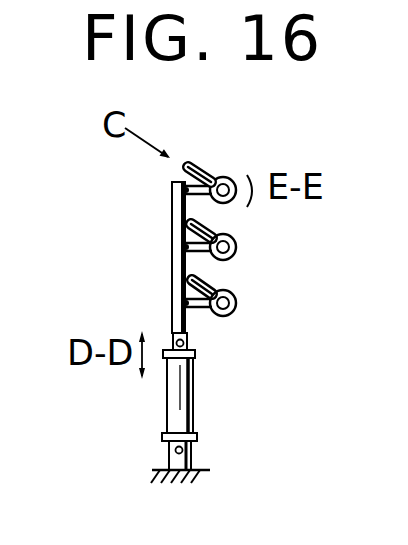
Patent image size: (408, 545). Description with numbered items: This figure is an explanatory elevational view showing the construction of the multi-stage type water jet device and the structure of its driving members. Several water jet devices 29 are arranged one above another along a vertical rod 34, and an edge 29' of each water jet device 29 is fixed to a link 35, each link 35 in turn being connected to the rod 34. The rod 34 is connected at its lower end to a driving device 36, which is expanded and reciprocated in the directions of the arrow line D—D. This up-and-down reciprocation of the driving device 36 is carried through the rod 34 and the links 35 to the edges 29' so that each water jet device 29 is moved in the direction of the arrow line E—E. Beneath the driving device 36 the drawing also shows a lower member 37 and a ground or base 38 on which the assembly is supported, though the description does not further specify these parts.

The water jet device 29 is at (225, 156).
The edge of water jet device 29' is at (149, 178).
The rod 34 is at (172, 228).
The link 35 is at (205, 262).
The driving device 36 is at (193, 380).
The piston rod 37 is at (185, 455).
The base 38 is at (195, 480).